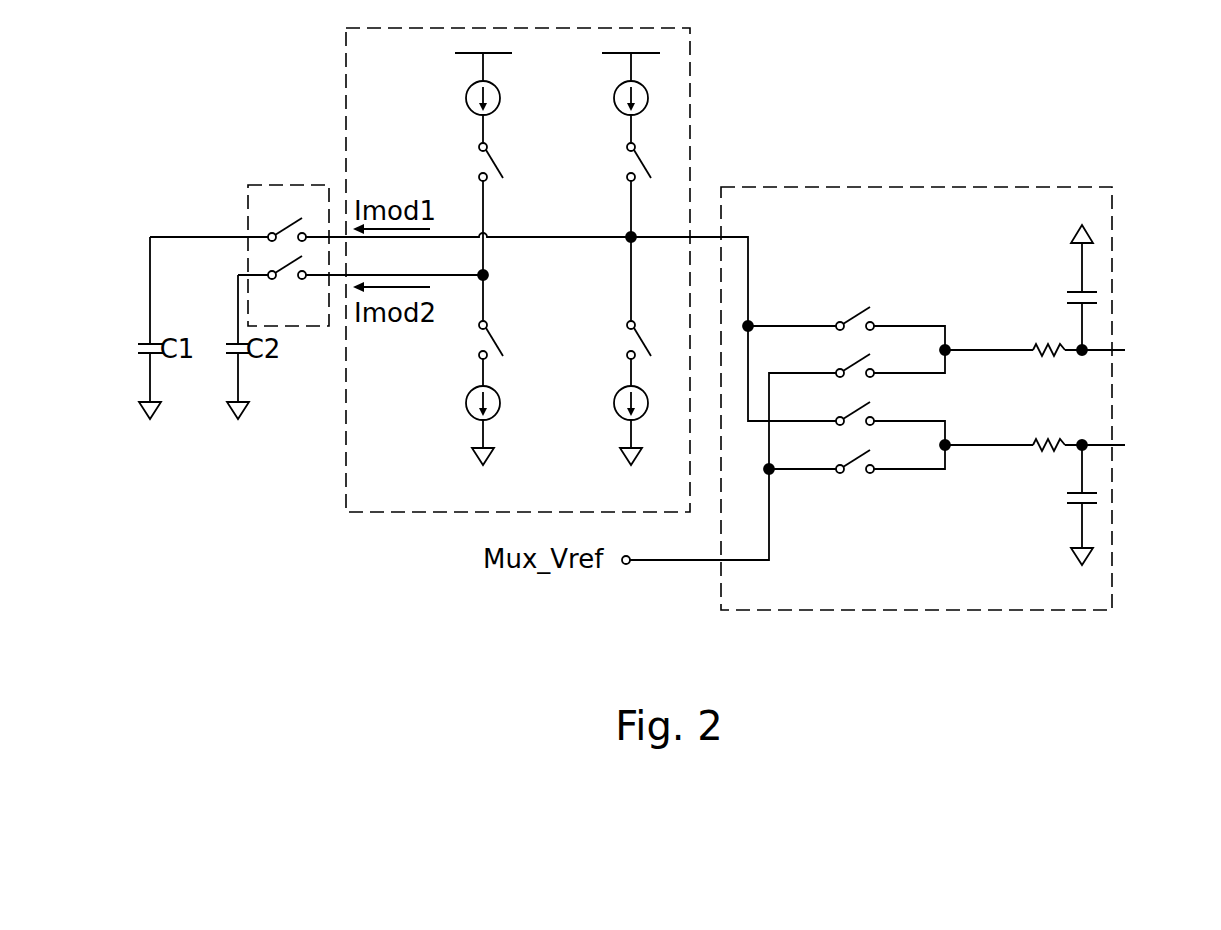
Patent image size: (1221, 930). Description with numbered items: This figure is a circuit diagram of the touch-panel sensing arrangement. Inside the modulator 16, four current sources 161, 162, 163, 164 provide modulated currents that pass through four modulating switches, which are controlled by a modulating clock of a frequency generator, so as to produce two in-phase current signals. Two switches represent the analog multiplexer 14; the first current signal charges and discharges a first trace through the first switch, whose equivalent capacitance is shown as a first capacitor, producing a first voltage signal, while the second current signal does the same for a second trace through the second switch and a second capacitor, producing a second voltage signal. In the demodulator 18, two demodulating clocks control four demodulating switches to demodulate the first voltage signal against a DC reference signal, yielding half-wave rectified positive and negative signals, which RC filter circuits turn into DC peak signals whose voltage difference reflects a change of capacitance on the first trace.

The analog multiplexer 14 is at (247, 183).
The modulator 16 is at (345, 103).
The demodulator 18 is at (915, 185).
The current source 161 is at (614, 92).
The current source 162 is at (614, 397).
The current source 163 is at (466, 92).
The current source 164 is at (466, 397).